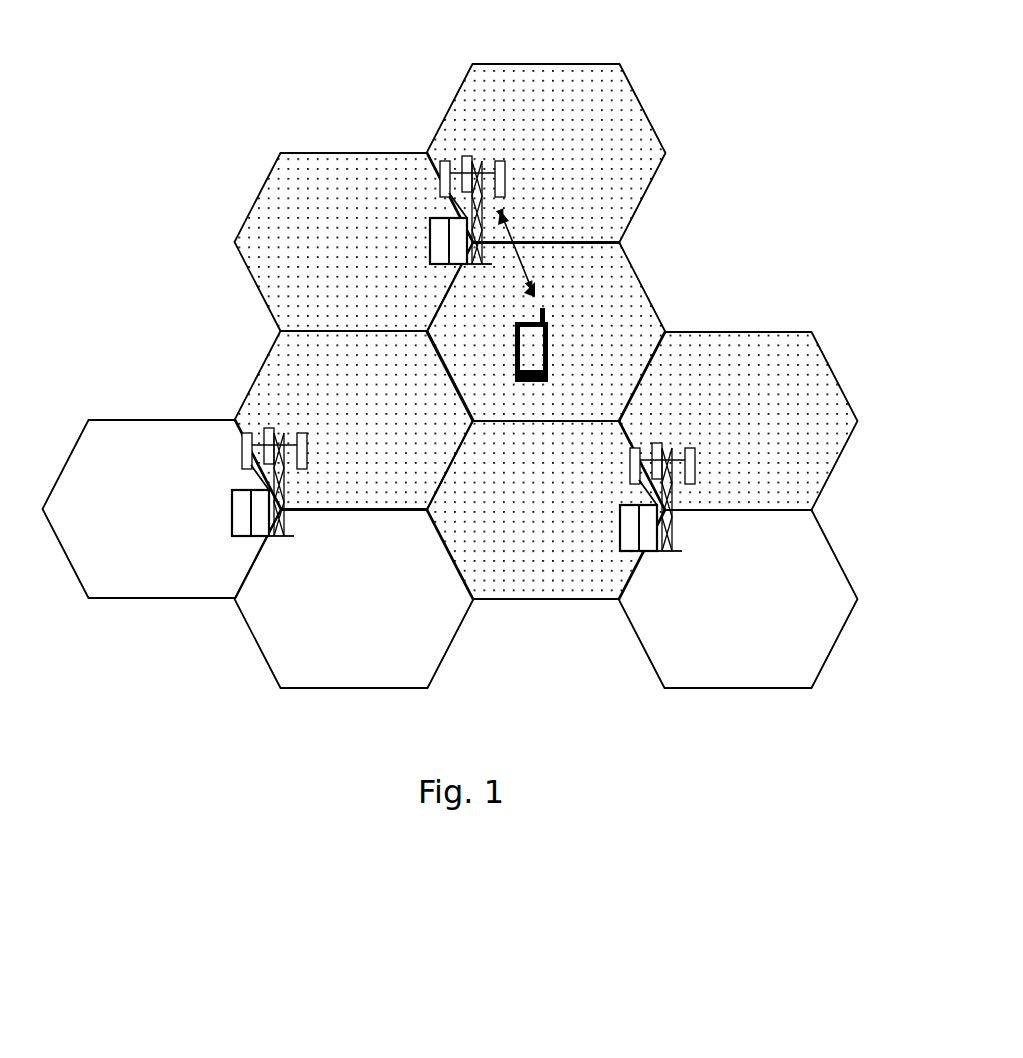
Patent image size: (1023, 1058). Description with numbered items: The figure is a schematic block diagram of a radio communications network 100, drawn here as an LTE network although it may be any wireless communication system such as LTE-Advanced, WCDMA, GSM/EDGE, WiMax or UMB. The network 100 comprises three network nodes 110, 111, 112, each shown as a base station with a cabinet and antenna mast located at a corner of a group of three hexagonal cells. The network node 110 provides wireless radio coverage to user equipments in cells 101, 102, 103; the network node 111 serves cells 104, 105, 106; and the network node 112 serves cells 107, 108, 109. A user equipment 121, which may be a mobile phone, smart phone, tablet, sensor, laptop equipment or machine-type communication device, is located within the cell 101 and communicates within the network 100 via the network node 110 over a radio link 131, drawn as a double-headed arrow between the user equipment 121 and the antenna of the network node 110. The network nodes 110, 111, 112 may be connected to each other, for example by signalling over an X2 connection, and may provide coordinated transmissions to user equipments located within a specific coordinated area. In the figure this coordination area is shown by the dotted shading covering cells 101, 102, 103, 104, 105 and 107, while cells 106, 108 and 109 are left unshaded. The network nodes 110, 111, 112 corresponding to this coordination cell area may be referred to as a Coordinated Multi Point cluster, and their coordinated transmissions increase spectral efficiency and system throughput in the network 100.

The radio communications network 100 is at (852, 679).
The cell 101 is at (622, 276).
The cell 102 is at (333, 186).
The cell 103 is at (523, 97).
The cell 104 is at (717, 369).
The cell 105 is at (570, 450).
The cell 106 is at (717, 686).
The cell 107 is at (332, 362).
The cell 108 is at (137, 449).
The cell 109 is at (332, 682).
The network node 110 is at (433, 246).
The network node 111 is at (672, 548).
The network node 112 is at (232, 516).
The user equipment 121 is at (548, 357).
The radio link 131 is at (512, 232).